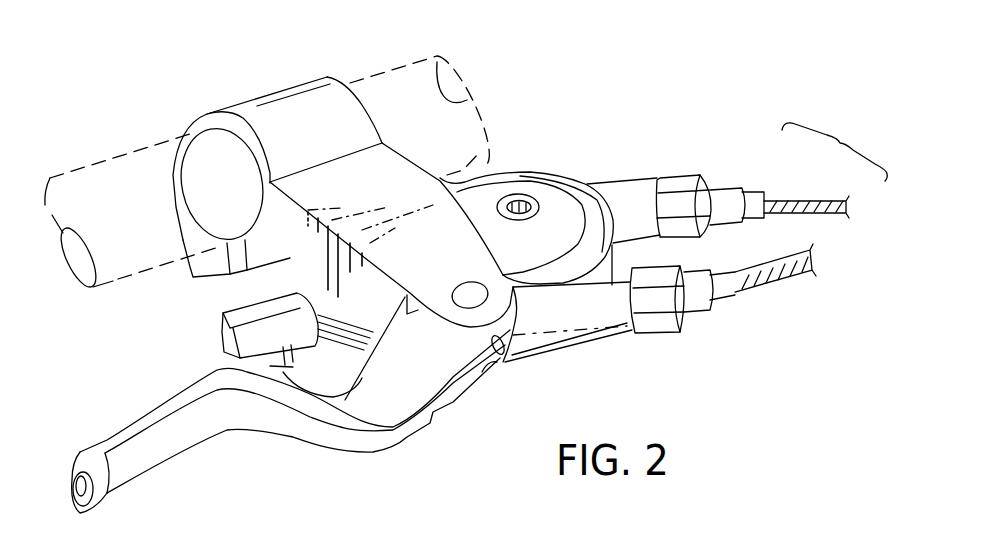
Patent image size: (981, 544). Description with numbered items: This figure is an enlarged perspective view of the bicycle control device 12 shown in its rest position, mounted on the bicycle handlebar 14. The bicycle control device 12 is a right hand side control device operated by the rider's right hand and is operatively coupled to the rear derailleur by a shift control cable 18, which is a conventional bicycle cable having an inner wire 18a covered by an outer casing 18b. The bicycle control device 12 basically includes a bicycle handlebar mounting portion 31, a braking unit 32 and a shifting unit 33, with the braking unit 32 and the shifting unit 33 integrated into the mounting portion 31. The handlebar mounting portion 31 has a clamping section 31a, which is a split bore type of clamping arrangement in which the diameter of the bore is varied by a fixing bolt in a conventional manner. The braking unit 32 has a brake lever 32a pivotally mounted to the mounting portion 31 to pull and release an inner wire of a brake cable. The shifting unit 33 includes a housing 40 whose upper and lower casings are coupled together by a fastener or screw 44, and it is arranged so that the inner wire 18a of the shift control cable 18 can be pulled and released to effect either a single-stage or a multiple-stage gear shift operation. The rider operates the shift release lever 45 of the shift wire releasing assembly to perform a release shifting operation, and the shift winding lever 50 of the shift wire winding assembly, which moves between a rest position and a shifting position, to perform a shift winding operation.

The bicycle control device 12 is at (210, 85).
The bicycle handlebar 14 is at (395, 66).
The shift control cable 18 is at (834, 146).
The inner wire 18a is at (798, 197).
The outer casing 18b is at (747, 192).
The bicycle handlebar mounting portion 31 is at (286, 87).
The clamping section 31a is at (193, 233).
The braking unit 32 is at (508, 384).
The brake lever 32a is at (278, 430).
The shifting unit 33 is at (608, 154).
The housing 40 is at (557, 178).
The screw 44 is at (517, 203).
The shift release lever 45 is at (228, 315).
The shift winding lever 50 is at (310, 367).